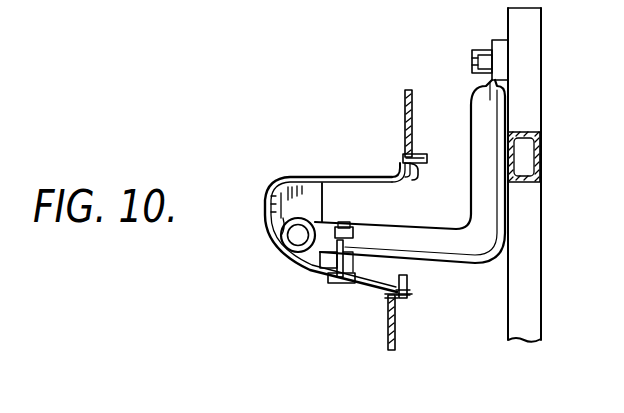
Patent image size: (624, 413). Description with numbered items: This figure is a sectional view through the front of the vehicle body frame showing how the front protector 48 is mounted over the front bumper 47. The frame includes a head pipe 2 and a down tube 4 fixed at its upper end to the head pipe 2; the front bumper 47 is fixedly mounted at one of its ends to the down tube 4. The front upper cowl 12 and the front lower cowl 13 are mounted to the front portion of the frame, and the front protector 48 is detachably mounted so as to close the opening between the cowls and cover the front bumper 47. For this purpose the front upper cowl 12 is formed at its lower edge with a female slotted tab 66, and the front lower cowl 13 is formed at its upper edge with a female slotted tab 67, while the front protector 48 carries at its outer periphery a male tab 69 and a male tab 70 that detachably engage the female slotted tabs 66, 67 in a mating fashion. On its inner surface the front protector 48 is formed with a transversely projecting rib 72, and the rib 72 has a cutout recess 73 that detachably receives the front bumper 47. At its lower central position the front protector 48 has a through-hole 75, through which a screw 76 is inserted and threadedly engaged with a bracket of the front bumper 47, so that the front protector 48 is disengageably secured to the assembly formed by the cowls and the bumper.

The down tube 4 is at (533, 50).
The front bumper 47 is at (473, 268).
The front protector 48 is at (299, 177).
The cutout recess 73 is at (275, 203).
The rib 72 is at (324, 203).
The head pipe 2 is at (355, 227).
The front upper cowl 12 is at (405, 110).
The male tab 69 is at (423, 152).
The female slotted tab 66 is at (418, 172).
The through-hole 75 is at (328, 275).
The screw 76 is at (331, 284).
The male tab 70 is at (408, 292).
The female slotted tab 67 is at (407, 300).
The front lower cowl 13 is at (387, 343).